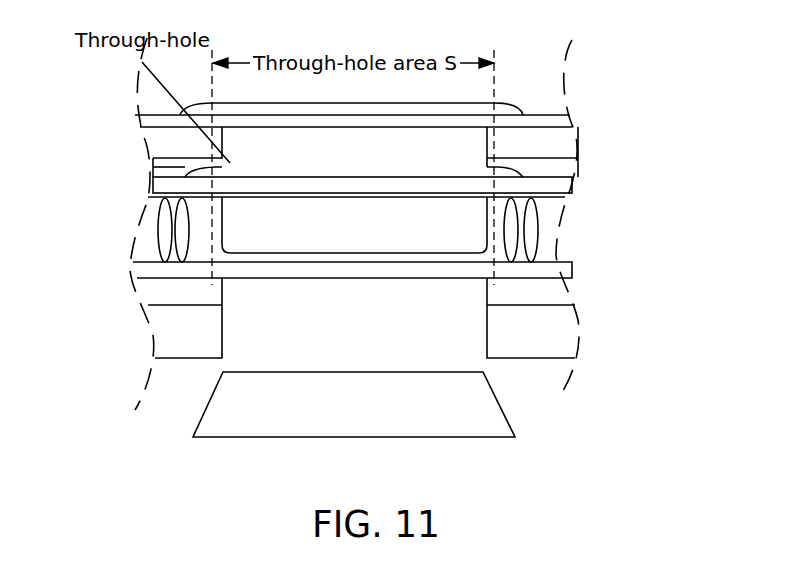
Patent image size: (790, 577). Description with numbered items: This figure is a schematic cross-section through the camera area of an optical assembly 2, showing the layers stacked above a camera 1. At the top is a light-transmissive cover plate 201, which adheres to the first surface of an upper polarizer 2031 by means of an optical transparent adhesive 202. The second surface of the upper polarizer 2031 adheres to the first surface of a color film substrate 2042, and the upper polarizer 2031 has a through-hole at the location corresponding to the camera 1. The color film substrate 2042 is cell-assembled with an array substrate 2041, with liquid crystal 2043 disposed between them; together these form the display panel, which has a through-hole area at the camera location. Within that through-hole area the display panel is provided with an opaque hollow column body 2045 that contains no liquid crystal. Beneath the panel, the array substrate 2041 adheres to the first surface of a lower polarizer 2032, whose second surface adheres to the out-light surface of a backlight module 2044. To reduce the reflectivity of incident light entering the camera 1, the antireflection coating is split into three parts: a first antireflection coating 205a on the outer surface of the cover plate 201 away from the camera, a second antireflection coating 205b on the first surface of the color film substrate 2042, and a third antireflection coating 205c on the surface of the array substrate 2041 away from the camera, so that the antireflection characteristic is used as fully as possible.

The camera 1 is at (222, 403).
The optical assembly 2 is at (133, 114).
The cover plate 201 is at (520, 120).
The optical transparent adhesive 202 is at (525, 145).
The upper polarizer 2031 is at (533, 167).
The lower polarizer 2032 is at (548, 292).
The array substrate 2041 is at (542, 270).
The color film substrate 2042 is at (542, 188).
The liquid crystal 2043 is at (535, 219).
The backlight module 2044 is at (555, 343).
The opaque hollow column body 2045 is at (487, 242).
The first antireflection coating 205a is at (515, 107).
The second antireflection coating 205b is at (218, 172).
The third antireflection coating 205c is at (263, 255).